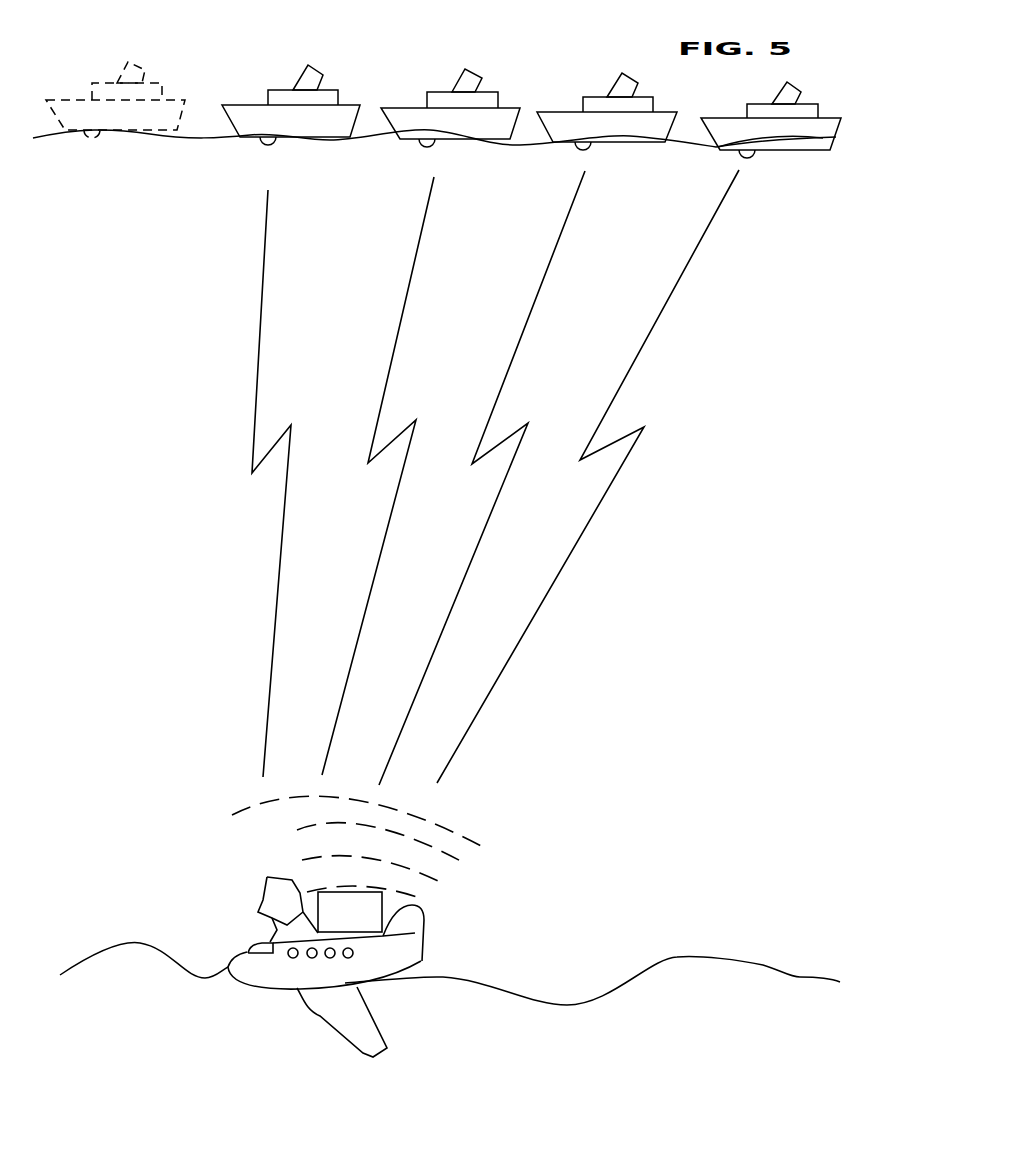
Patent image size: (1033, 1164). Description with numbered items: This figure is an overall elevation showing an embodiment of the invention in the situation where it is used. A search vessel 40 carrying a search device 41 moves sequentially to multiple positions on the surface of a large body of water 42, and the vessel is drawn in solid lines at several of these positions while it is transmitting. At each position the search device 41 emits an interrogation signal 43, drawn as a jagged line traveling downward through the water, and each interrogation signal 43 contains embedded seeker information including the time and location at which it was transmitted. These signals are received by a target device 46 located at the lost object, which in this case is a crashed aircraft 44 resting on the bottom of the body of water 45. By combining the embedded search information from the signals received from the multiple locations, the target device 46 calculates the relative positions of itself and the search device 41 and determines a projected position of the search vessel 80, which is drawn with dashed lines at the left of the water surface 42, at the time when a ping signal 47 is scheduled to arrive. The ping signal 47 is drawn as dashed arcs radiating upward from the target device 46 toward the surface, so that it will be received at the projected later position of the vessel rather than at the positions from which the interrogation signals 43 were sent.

The projected position of the search vessel 80 is at (142, 133).
The surface of a large body of water 42 is at (219, 141).
The search vessel 40 is at (317, 136).
The search device 41 is at (270, 145).
The interrogation signal 43 is at (257, 374).
The ping signal 47 is at (280, 803).
The target device 46 is at (335, 892).
The crashed aircraft 44 is at (423, 938).
The bottom of the body of water 45 is at (768, 963).